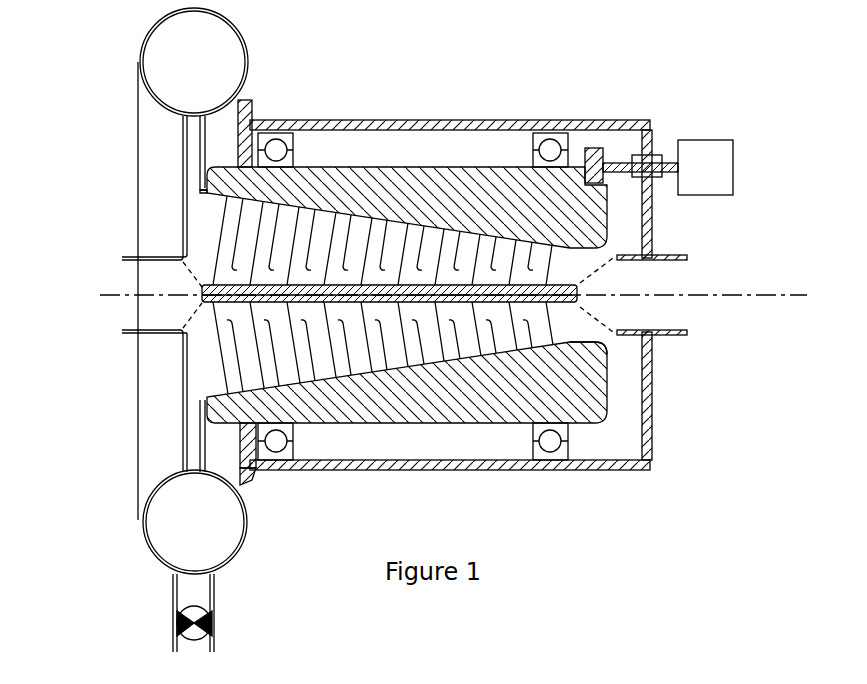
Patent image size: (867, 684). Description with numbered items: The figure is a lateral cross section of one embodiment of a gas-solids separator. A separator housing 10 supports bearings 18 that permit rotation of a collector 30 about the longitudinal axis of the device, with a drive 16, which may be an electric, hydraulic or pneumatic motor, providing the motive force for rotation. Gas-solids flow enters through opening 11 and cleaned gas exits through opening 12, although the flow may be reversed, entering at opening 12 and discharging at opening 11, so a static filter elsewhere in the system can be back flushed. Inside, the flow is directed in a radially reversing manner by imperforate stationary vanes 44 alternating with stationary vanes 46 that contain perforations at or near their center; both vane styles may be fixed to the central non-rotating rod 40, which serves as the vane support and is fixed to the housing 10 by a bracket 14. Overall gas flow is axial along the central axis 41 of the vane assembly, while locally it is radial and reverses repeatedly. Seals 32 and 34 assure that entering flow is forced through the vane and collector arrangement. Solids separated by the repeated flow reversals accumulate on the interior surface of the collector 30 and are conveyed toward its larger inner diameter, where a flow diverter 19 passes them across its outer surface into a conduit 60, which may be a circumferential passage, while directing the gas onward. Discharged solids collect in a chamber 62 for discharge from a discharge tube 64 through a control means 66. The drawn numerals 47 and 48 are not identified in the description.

The separator housing 10 is at (390, 125).
The opening 11 is at (145, 287).
The opening 12 is at (660, 277).
The bracket 14 is at (200, 281).
The drive 16 is at (703, 157).
The bearings 18 is at (545, 140).
The flow diverter 19 is at (245, 423).
The collector 30 is at (580, 403).
The seal 32 is at (598, 343).
The seal 34 is at (205, 422).
The central non-rotating rod 40 is at (557, 297).
The central axis 41 is at (710, 295).
The stationary vanes 44 is at (212, 240).
The stationary vanes 46 is at (240, 360).
The inlet passage 47 is at (228, 314).
The rotor lip 48 is at (203, 191).
The conduit 60 is at (195, 147).
The chamber 62 is at (170, 52).
The discharge tube 64 is at (187, 595).
The control means 66 is at (225, 623).